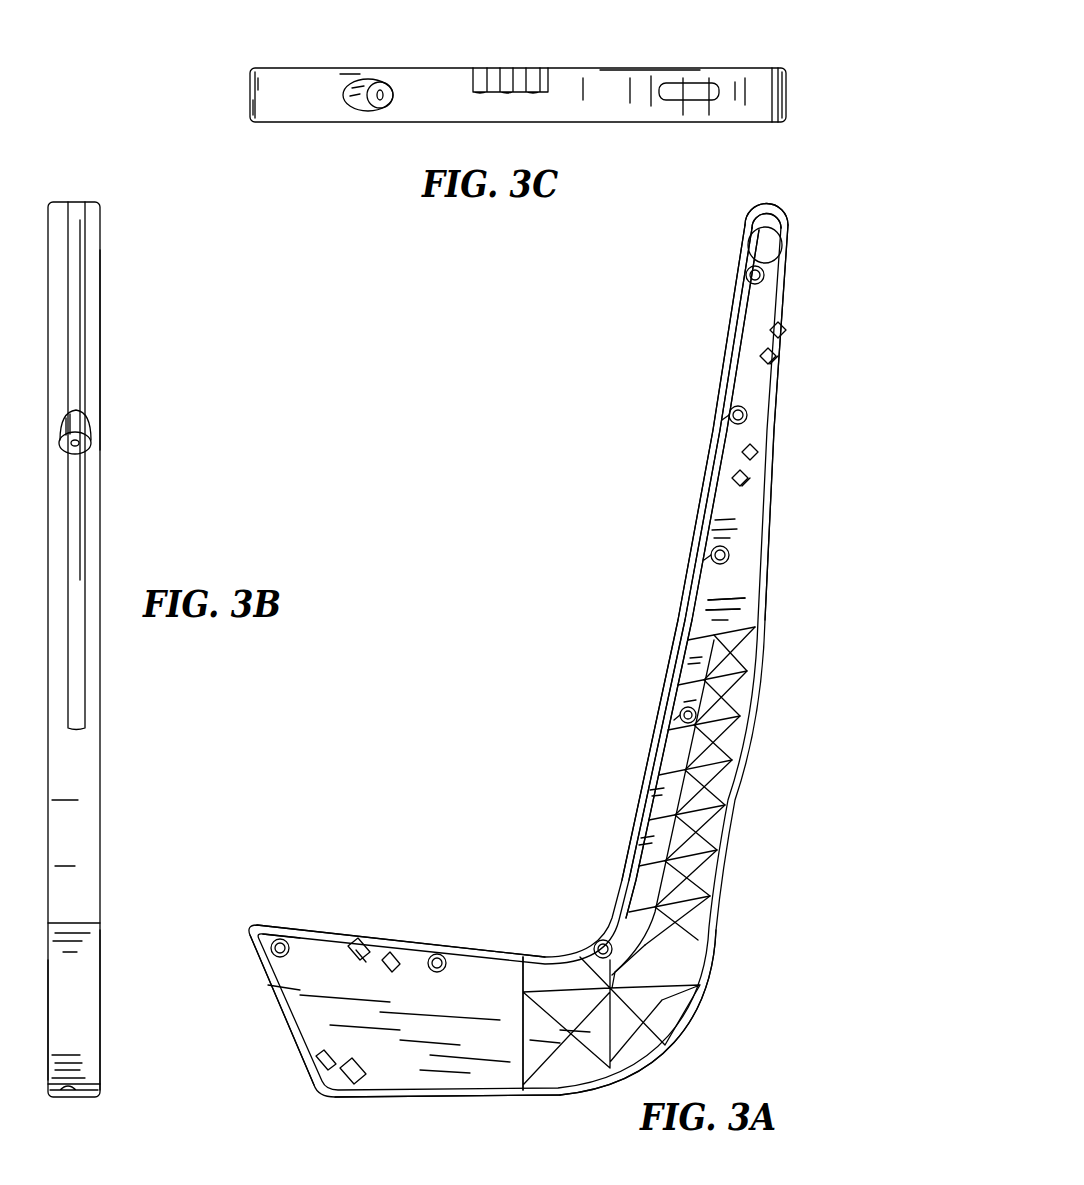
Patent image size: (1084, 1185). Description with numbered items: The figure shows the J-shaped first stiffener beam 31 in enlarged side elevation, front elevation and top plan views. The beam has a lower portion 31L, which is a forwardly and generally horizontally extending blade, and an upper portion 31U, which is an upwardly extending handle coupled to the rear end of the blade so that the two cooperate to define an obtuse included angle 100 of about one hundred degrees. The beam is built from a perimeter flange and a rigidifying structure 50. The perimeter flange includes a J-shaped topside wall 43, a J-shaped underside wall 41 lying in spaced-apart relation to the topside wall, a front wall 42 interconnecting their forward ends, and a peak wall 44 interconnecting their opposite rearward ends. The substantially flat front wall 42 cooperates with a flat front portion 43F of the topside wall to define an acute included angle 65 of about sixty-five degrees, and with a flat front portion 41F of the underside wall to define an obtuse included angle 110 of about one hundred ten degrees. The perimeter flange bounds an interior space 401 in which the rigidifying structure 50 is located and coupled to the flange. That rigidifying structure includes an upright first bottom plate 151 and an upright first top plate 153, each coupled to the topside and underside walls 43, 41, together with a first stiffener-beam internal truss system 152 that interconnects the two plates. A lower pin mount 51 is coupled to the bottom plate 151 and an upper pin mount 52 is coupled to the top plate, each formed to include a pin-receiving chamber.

In FIG. 3C, the first stiffener beam 31 is at (246, 72).
In FIG. 3B, the first stiffener beam 31 is at (70, 198).
In FIG. 3A, the first stiffener beam 31 is at (578, 633).
In FIG. 3C, the upper portion of first stiffener beam 31U is at (689, 62).
In FIG. 3B, the upper portion of first stiffener beam 31U is at (104, 305).
In FIG. 3A, the upper portion of first stiffener beam 31U is at (678, 600).
In FIG. 3C, the lower portion of first stiffener beam 31L is at (342, 66).
In FIG. 3B, the lower portion of first stiffener beam 31L is at (100, 992).
In FIG. 3A, the lower portion of first stiffener beam 31L is at (345, 930).
In FIG. 3A, the J-shaped underside wall 41 is at (773, 577).
In FIG. 3B, the flat front portion of J-shaped underside wall 41F is at (80, 1098).
In FIG. 3A, the flat front portion of J-shaped underside wall 41F is at (396, 1100).
In FIG. 3C, the front wall 42 is at (250, 104).
In FIG. 3B, the front wall 42 is at (72, 1020).
In FIG. 3A, the front wall 42 is at (285, 1040).
In FIG. 3C, the J-shaped topside wall 43 is at (560, 92).
In FIG. 3B, the J-shaped topside wall 43 is at (75, 768).
In FIG. 3A, the J-shaped topside wall 43 is at (700, 500).
In FIG. 3C, the flat front portion of J-shaped topside wall 43F is at (418, 88).
In FIG. 3B, the flat front portion of J-shaped topside wall 43F is at (68, 923).
In FIG. 3A, the flat front portion of J-shaped topside wall 43F is at (392, 935).
In FIG. 3C, the peak wall 44 is at (761, 96).
In FIG. 3A, the peak wall 44 is at (771, 208).
In FIG. 3A, the rigidifying structure 50 is at (748, 385).
In FIG. 3A, the lower pin mount 51 is at (273, 955).
In FIG. 3A, the upper pin mount 52 is at (764, 284).
In FIG. 3A, the acute included angle 65 is at (272, 982).
In FIG. 3A, the obtuse included angle 100 is at (642, 807).
In FIG. 3A, the obtuse included angle 110 is at (292, 1016).
In FIG. 3A, the upright first bottom plate 151 is at (490, 965).
In FIG. 3A, the first stiffener-beam internal truss system 152 is at (700, 890).
In FIG. 3A, the upright first top plate 153 is at (750, 600).
In FIG. 3A, the interior space 401 is at (752, 495).